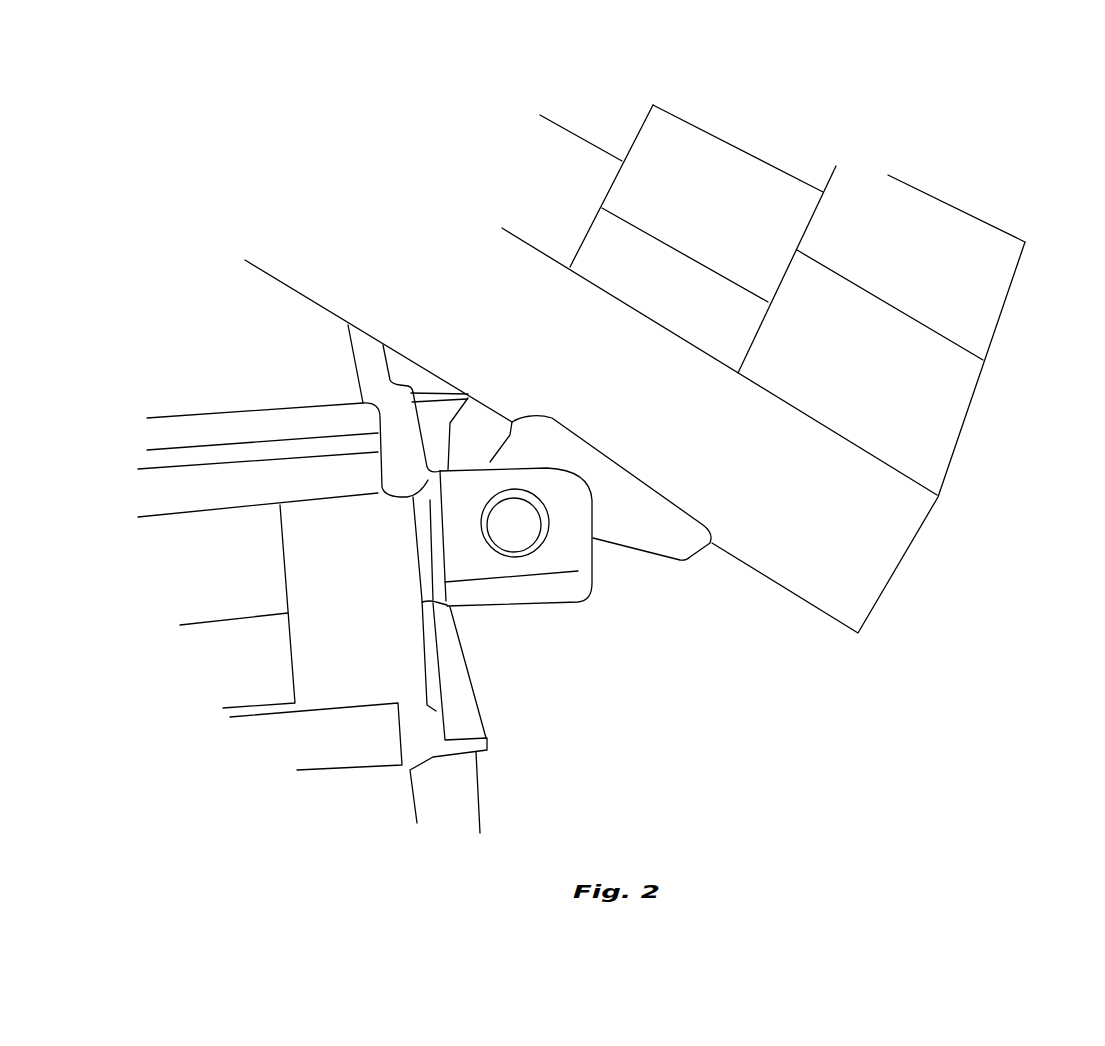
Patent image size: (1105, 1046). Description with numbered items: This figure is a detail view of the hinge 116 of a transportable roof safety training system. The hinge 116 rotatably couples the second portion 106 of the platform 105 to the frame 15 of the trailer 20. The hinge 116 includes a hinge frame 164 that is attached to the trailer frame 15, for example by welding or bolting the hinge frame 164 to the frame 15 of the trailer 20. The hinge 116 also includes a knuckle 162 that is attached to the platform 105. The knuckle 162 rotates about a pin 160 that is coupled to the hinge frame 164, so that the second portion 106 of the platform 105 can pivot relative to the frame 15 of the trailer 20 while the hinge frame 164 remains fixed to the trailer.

The frame 15 is at (432, 693).
The trailer 20 is at (505, 800).
The platform 105 is at (969, 478).
The second portion 106 is at (957, 278).
The hinge 116 is at (683, 610).
The pin 160 is at (517, 527).
The knuckle 162 is at (480, 432).
The hinge frame 164 is at (482, 563).